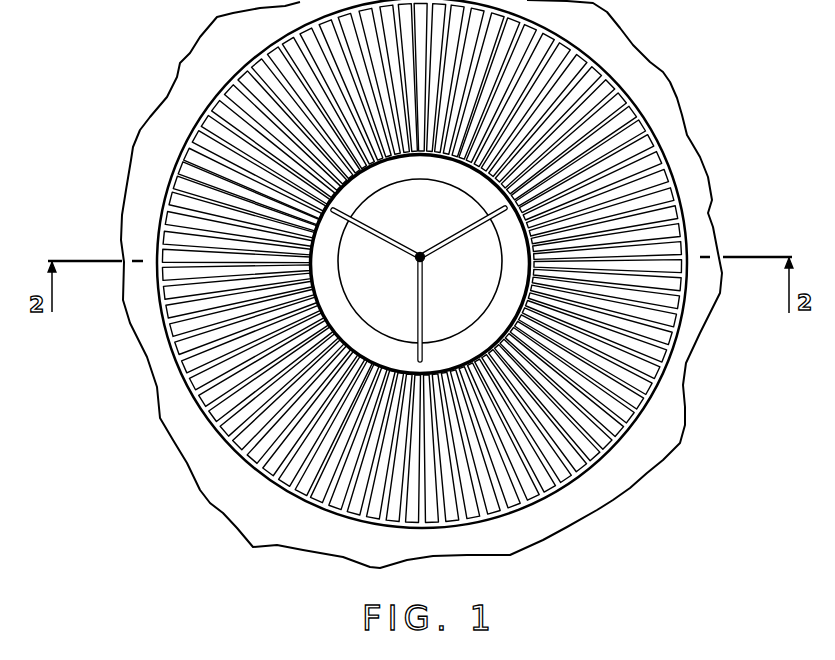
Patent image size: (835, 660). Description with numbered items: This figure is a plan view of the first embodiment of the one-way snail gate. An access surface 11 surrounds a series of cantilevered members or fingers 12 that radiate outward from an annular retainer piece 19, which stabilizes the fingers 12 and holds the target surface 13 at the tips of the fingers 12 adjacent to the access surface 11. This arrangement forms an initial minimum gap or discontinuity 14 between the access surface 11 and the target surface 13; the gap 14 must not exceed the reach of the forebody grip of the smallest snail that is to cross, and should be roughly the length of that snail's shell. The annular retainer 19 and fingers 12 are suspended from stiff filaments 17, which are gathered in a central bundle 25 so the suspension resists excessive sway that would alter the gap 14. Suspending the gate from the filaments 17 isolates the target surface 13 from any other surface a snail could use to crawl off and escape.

The access surface 11 is at (665, 90).
The cantilevered members or fingers 12 is at (461, 211).
The target surface 13 is at (652, 167).
The initial minimum gap or discontinuity 14 is at (673, 194).
The stiff filaments 17 is at (373, 233).
The annular retainer piece 19 is at (340, 304).
The central bundle 25 is at (420, 247).